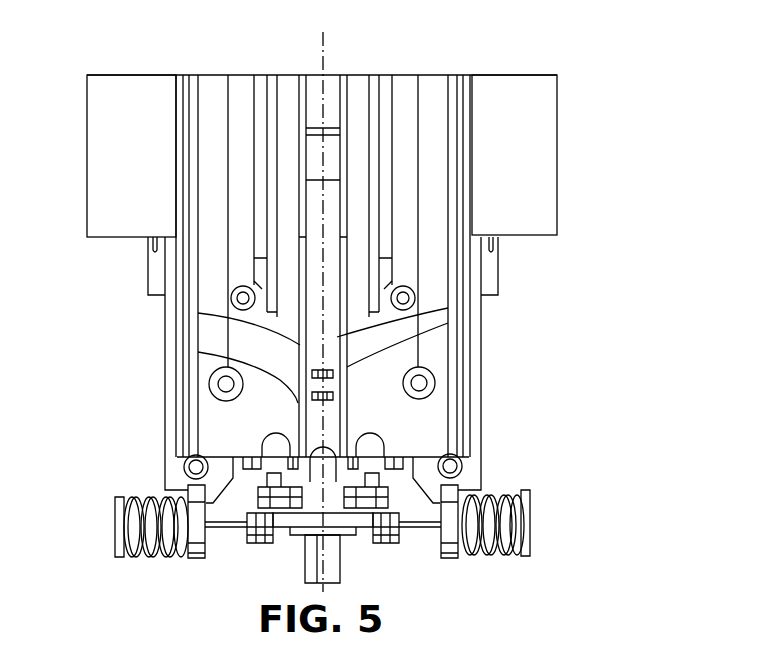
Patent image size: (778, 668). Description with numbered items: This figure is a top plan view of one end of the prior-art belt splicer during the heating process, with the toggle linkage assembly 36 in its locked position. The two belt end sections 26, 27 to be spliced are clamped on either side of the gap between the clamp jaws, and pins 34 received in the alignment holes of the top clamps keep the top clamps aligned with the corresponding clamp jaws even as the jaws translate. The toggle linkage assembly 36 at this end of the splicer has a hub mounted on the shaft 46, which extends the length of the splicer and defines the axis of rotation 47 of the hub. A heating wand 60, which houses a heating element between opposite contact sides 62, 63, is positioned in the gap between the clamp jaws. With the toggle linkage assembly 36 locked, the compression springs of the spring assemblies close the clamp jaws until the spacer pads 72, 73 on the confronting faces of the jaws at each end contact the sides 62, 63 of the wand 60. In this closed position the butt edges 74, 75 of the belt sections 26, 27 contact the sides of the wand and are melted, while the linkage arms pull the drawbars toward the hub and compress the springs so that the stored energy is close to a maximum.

The belt end section 26 is at (88, 162).
The belt end section 27 is at (553, 178).
The pin 34 is at (435, 384).
The toggle linkage assembly 36 is at (273, 550).
The shaft 46 is at (340, 567).
The axis of rotation 47 is at (322, 38).
The heating wand 60 is at (313, 85).
The contact side 62 is at (198, 313).
The contact side 63 is at (448, 308).
The spacer pad 72 is at (198, 352).
The spacer pad 73 is at (448, 323).
The butt edge 74 is at (322, 187).
The butt edge 75 is at (322, 187).